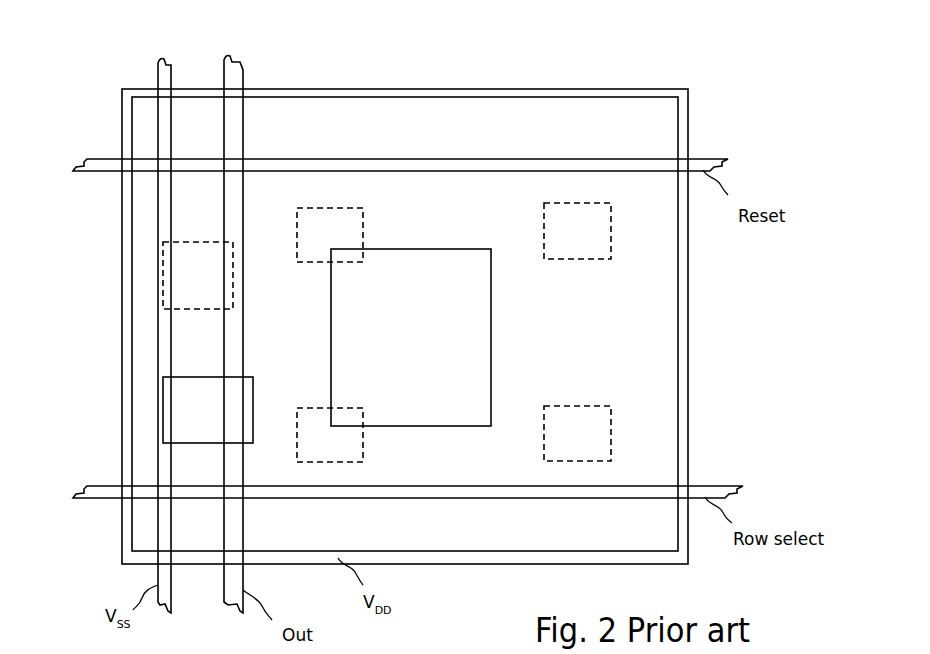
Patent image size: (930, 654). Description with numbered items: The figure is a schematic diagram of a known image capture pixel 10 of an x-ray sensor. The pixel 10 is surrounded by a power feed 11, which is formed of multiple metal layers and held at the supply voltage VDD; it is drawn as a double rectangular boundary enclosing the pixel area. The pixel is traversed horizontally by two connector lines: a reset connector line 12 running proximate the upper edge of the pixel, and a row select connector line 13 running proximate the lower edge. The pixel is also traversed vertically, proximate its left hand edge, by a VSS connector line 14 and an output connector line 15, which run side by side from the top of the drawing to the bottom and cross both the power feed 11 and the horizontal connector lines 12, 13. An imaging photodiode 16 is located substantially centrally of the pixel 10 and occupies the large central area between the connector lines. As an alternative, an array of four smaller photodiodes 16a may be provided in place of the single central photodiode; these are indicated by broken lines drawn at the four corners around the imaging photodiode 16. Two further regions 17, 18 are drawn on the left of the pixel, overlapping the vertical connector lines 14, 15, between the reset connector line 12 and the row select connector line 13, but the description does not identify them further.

The image capture pixel 10 is at (728, 50).
The power feed 11 is at (684, 307).
The reset connector line 12 is at (100, 158).
The row select connector line 13 is at (95, 485).
The VSS connector line 14 is at (157, 61).
The output connector line 15 is at (223, 72).
The imaging photodiode 16 is at (450, 286).
The smaller photodiodes 16a is at (331, 234).
The reset transistor 17 is at (185, 271).
The source follower / row select transistor 18 is at (185, 404).